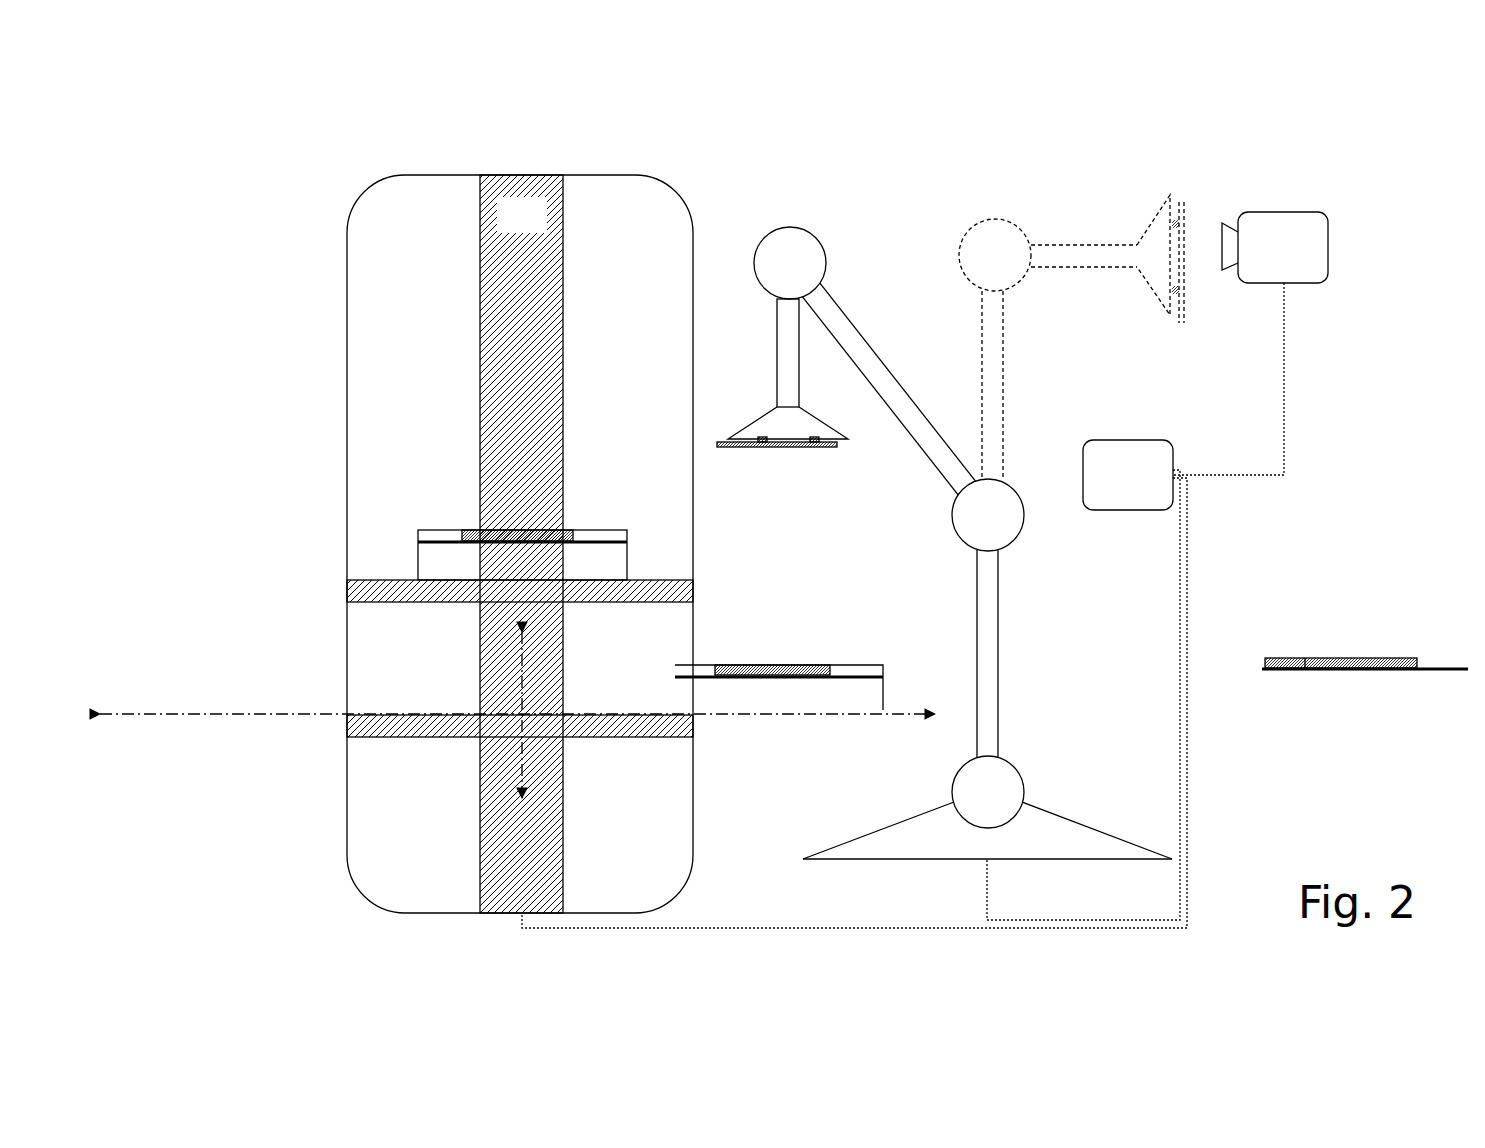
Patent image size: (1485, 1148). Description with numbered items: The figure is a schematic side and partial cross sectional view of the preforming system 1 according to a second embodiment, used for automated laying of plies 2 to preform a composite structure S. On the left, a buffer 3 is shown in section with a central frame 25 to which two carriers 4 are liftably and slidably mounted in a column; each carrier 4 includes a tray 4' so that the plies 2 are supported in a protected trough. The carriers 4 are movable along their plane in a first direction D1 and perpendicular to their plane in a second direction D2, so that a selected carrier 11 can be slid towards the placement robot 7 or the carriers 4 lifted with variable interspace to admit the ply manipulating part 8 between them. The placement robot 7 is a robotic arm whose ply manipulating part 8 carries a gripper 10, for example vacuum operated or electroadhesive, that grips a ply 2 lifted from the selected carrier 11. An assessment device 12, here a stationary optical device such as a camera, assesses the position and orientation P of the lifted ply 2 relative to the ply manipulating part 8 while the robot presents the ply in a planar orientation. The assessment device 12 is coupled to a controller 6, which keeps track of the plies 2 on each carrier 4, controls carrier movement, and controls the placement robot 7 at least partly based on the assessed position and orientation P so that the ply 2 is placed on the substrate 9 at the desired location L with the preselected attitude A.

The preforming system 1 is at (458, 493).
The ply 2 is at (574, 535).
The buffer 3 is at (521, 498).
The carrier 4 is at (517, 694).
The tray 4' is at (668, 620).
The controller 6 is at (1127, 440).
The placement robot 7 is at (896, 377).
The ply manipulating part 8 is at (788, 370).
The substrate 9 is at (1430, 667).
The gripper 10 is at (816, 437).
The selected carrier 11 is at (660, 730).
The assessment device 12 is at (1280, 210).
The frame 25 is at (522, 215).
The position and orientation P is at (1190, 238).
The composite structure S is at (1329, 605).
The desired location L is at (1273, 611).
The preselected attitude A is at (1293, 658).
The first direction D1 is at (788, 718).
The second direction D2 is at (520, 767).